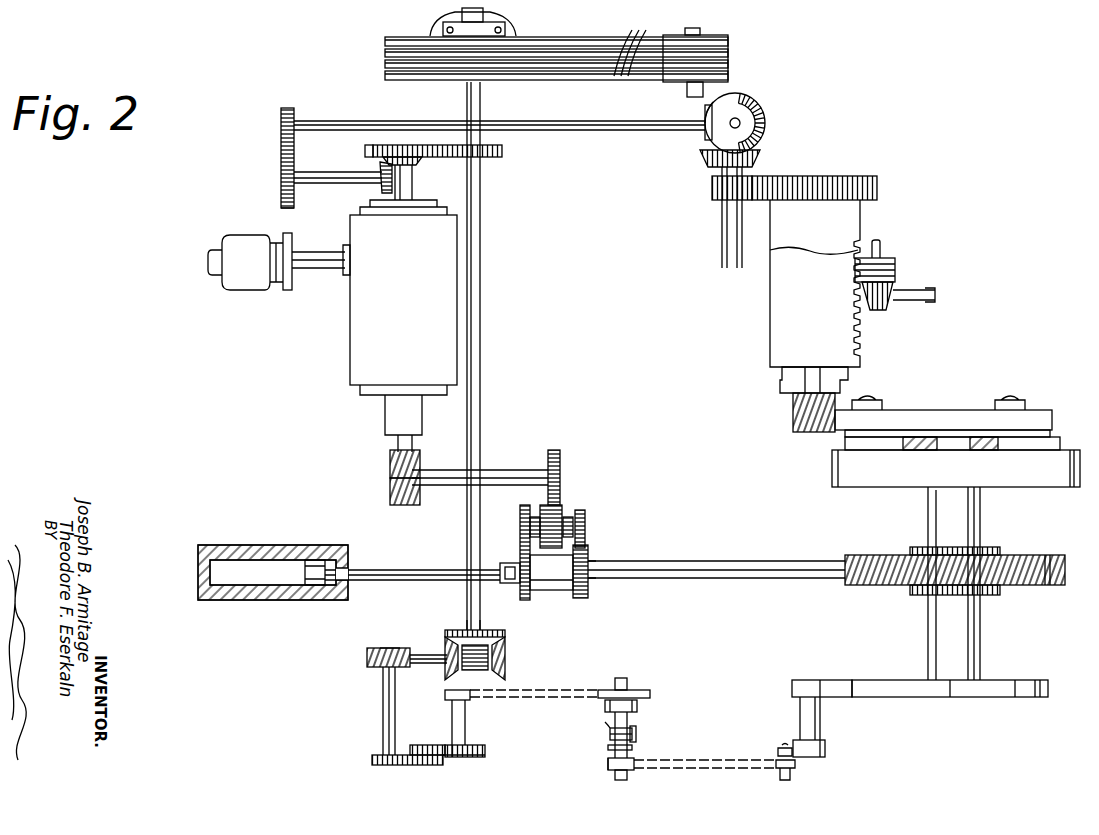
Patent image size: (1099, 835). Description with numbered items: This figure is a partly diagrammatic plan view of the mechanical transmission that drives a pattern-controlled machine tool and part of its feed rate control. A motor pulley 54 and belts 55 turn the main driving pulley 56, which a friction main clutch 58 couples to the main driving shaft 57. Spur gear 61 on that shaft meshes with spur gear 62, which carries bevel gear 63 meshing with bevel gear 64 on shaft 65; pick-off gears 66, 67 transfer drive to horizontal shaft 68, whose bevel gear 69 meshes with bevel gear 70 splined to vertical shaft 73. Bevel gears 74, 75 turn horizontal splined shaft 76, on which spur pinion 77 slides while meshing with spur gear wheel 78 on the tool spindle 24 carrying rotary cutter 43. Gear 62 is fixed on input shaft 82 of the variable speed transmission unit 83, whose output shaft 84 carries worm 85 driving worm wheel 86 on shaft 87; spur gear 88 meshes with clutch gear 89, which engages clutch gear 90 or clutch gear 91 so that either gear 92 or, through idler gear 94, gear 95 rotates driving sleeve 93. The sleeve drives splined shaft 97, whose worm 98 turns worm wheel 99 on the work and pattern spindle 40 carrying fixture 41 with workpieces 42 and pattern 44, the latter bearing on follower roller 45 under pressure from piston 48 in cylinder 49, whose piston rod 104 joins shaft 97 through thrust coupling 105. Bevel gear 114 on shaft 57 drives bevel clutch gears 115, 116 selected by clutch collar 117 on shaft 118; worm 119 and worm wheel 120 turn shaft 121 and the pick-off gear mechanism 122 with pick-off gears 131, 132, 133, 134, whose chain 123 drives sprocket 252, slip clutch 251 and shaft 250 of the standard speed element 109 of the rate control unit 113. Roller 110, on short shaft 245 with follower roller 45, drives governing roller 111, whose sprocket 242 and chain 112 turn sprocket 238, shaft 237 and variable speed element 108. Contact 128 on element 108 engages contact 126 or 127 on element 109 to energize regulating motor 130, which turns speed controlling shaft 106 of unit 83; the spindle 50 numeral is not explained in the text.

The tool spindle 24 is at (782, 388).
The work and pattern carrying spindle 40 is at (980, 508).
The work holder or supporting fixture 41 is at (878, 487).
The workpieces 42 is at (983, 410).
The rotary cutter 43 is at (793, 422).
The guiding cam or pattern 44 is at (1002, 680).
The follower roller 45 is at (806, 680).
The hydraulic piston 48 is at (312, 559).
The cylinder 49 is at (222, 545).
The spindle 50 is at (625, 669).
The pulley 54 is at (718, 34).
The belts 55 is at (630, 40).
The main driving pulley 56 is at (520, 36).
The main driving shaft 57 is at (481, 103).
The friction main clutch 58 is at (432, 26).
The spur gear 61 is at (504, 150).
The spur gear 62 is at (364, 150).
The bevel gear 63 is at (420, 162).
The bevel gear 64 is at (380, 190).
The shaft 65 is at (350, 172).
The pick-off gear 66 is at (282, 208).
The pick-off gear 67 is at (288, 108).
The horizontal shaft 68 is at (342, 120).
The bevel gear 69 is at (704, 108).
The bevel gear 70 is at (713, 140).
The splined shaft 73 is at (740, 120).
The bevel gear 74 is at (766, 112).
The bevel gear 75 is at (760, 160).
The splined shaft 76 is at (722, 228).
The spur pinion 77 is at (712, 188).
The spur gear wheel 78 is at (865, 176).
The input shaft 82 is at (414, 185).
The variable speed transmission unit or rate changer 83 is at (350, 346).
The output shaft 84 is at (397, 441).
The worm 85 is at (389, 472).
The worm wheel 86 is at (395, 506).
The horizontal shaft 87 is at (498, 470).
The spur gear 88 is at (555, 450).
The clutch gear 89 is at (560, 505).
The clutch gear 90 is at (528, 517).
The clutch gear 91 is at (583, 510).
The gear 92 is at (519, 548).
The driving sleeve 93 is at (566, 585).
The idler gear 94 is at (588, 545).
The gear 95 is at (586, 582).
The splined shaft 97 is at (752, 560).
The worm 98 is at (1000, 552).
The worm wheel 99 is at (1040, 586).
The piston rod 104 is at (425, 556).
The rotatable joint or thrust coupling 105 is at (503, 585).
The speed controlling shaft 106 is at (320, 270).
The rotatable control element 108 is at (606, 760).
The rotatable element 109 is at (606, 725).
The roller 110 is at (826, 750).
The governing or measuring roller 111 is at (785, 745).
The chain 112 is at (700, 768).
The electrical rate control unit 113 is at (591, 753).
The bevel gear 114 is at (458, 632).
The bevel clutch gear 115 is at (445, 645).
The bevel clutch gear 116 is at (506, 660).
The clutch collar 117 is at (488, 678).
The shaft 118 is at (430, 664).
The worm 119 is at (380, 648).
The worm wheel 120 is at (366, 656).
The shaft 121 is at (383, 715).
The rate changing pick-off gear mechanism 122 is at (513, 762).
The chain 123 is at (568, 698).
The electrical contact element 126 is at (609, 736).
The electrical contact element 127 is at (633, 736).
The intermediate contact element 128 is at (636, 728).
The regulating motor 130 is at (248, 290).
The pick-off gear 131 is at (372, 764).
The pick-off gear 132 is at (432, 765).
The pick-off gear 133 is at (425, 745).
The pick-off gear 134 is at (485, 746).
The shaft 237 is at (636, 760).
The sprocket wheel 238 is at (614, 778).
The sprocket 242 is at (792, 772).
The short shaft 245 is at (822, 716).
The shaft 250 is at (628, 682).
The torque limiting coupling or slip clutch 251 is at (646, 708).
The sprocket 252 is at (648, 690).